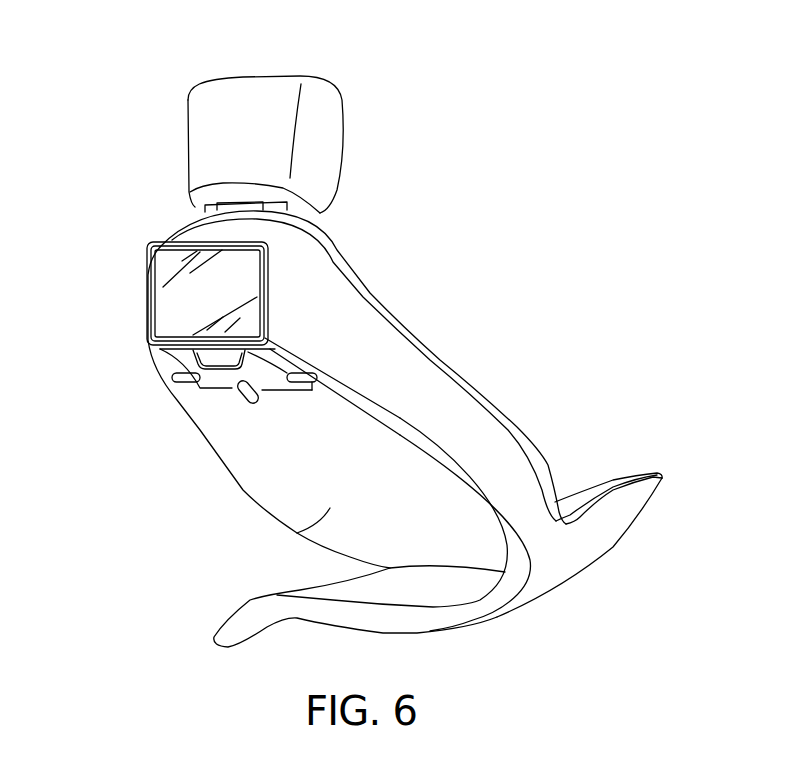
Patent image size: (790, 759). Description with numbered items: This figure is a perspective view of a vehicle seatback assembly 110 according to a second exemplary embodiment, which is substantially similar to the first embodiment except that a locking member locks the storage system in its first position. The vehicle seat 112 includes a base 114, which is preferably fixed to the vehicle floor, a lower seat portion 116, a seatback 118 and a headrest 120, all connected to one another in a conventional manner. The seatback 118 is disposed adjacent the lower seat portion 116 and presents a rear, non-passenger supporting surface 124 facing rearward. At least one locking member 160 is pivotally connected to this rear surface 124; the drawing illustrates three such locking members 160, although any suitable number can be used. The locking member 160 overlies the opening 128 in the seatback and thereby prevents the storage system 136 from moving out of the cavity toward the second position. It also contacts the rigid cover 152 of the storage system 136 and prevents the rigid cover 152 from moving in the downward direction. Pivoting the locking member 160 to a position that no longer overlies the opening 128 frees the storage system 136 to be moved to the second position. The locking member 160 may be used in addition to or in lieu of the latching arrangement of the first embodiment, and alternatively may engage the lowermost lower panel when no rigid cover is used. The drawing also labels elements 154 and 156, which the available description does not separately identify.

The vehicle seatback assembly 110 is at (490, 253).
The vehicle seat 112 is at (447, 357).
The base 114 is at (352, 633).
The lower seat portion 116 is at (610, 473).
The seatback 118 is at (513, 422).
The headrest 120 is at (342, 128).
The rear surface 124 is at (297, 533).
The opening 128 is at (282, 392).
The storage system 136 is at (220, 392).
The rigid cover 152 is at (263, 370).
The display bracket 154 is at (187, 370).
The display screen 156 is at (148, 271).
The locking member 160 is at (176, 386).